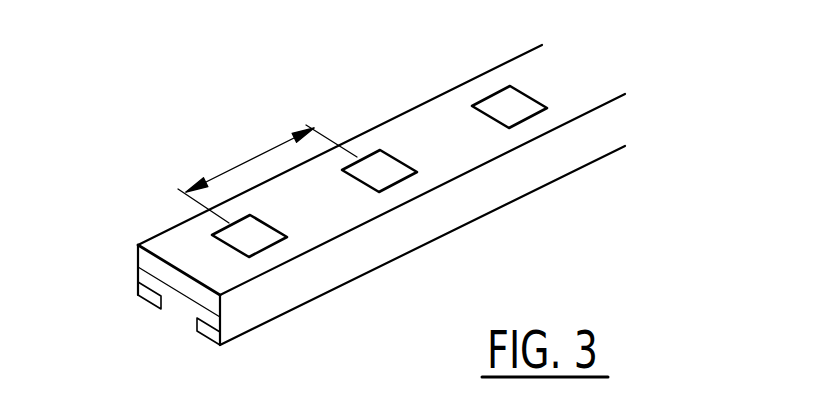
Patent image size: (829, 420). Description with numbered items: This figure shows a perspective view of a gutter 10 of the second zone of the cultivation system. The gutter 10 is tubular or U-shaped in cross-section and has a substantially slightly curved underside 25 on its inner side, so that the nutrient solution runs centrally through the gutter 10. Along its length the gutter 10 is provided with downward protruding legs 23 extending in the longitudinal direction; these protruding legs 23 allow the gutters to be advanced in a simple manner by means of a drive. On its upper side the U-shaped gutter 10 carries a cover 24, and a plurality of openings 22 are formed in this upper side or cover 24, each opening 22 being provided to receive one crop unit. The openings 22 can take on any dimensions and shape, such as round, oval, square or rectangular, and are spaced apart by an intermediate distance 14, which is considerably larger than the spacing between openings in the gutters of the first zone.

The gutter 10 is at (392, 218).
The intermediate distance 14 is at (248, 160).
The opening 22 is at (262, 247).
The protruding leg 23 is at (212, 335).
The cover 24 is at (448, 133).
The underside 25 is at (188, 305).